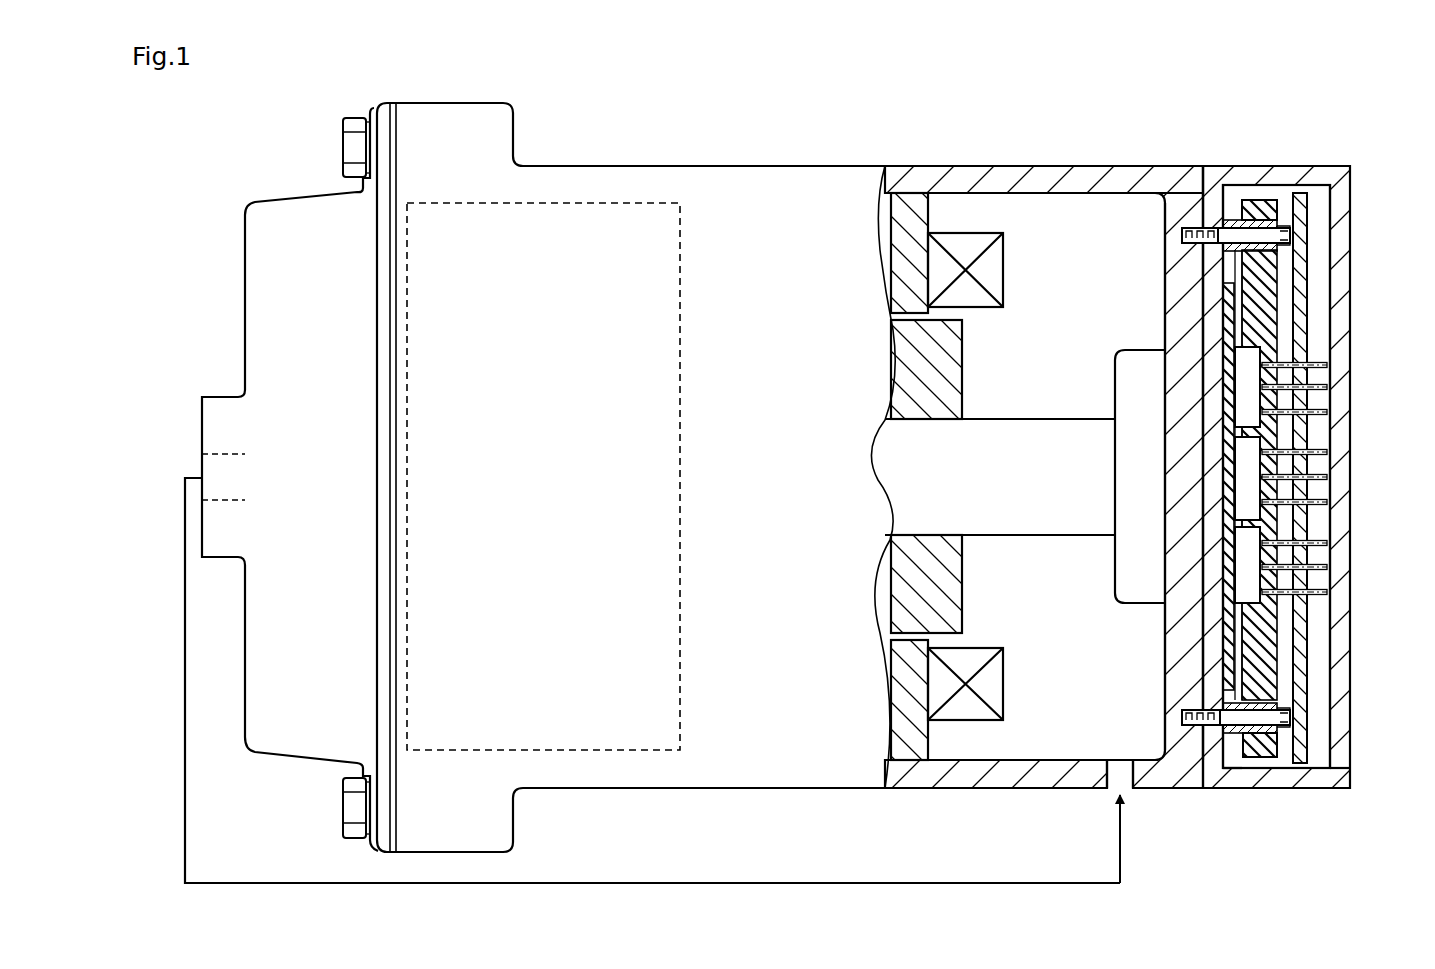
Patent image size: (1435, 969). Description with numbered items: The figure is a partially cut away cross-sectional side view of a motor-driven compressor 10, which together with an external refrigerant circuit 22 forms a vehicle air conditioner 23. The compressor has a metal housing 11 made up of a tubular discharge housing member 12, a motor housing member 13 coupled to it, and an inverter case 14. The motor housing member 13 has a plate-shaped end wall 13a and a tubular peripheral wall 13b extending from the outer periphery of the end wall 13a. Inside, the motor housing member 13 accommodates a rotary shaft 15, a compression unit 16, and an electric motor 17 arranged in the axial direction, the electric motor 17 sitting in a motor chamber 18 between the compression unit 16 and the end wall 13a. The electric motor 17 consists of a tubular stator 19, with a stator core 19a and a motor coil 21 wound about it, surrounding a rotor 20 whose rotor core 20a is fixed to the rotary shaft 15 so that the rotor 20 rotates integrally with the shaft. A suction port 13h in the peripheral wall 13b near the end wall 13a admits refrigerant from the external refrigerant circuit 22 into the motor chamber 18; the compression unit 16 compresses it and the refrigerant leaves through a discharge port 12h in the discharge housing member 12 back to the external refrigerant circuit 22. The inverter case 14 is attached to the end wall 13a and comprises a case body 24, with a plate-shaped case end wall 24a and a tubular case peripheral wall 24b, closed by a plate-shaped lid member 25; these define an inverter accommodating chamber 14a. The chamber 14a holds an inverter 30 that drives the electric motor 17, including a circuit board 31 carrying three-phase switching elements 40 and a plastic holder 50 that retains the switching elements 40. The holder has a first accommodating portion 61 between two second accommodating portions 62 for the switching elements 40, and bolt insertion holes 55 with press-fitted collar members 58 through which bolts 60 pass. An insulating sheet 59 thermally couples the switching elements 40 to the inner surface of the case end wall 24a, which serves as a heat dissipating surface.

The motor-driven compressor 10 is at (284, 149).
The housing 11 is at (695, 166).
The discharge housing member 12 is at (245, 243).
The discharge port 12h is at (234, 454).
The motor housing member 13 is at (909, 166).
The end wall 13a is at (1174, 226).
The peripheral wall 13b is at (1105, 176).
The suction port 13h is at (1112, 758).
The inverter case 14 is at (1318, 166).
The inverter accommodating chamber 14a is at (1320, 290).
The rotary shaft 15 is at (996, 535).
The compression unit 16 is at (588, 203).
The electric motor 17 is at (924, 191).
The motor chamber 18 is at (1040, 614).
The stator 19 is at (885, 476).
The stator core 19a is at (895, 247).
The rotor 20 is at (895, 580).
The rotor core 20a is at (956, 376).
The motor coil 21 is at (940, 268).
The external refrigerant circuit 22 is at (1124, 843).
The vehicle air conditioner 23 is at (1160, 873).
The case body 24 is at (1268, 789).
The case end wall 24a is at (1225, 378).
The case peripheral wall 24b is at (1232, 789).
The lid member 25 is at (1345, 789).
The inverter 30 is at (1320, 203).
The circuit board 31 is at (1302, 340).
The switching elements 40 is at (1240, 408).
The holder 50 is at (1236, 218).
The bolt insertion holes 55 is at (1262, 205).
The collar member 58 is at (1206, 220).
The insulating sheet 59 is at (1225, 643).
The bolts 60 is at (1292, 235).
The first accommodating portion 61 is at (1245, 470).
The second accommodating portions 62 is at (1230, 357).